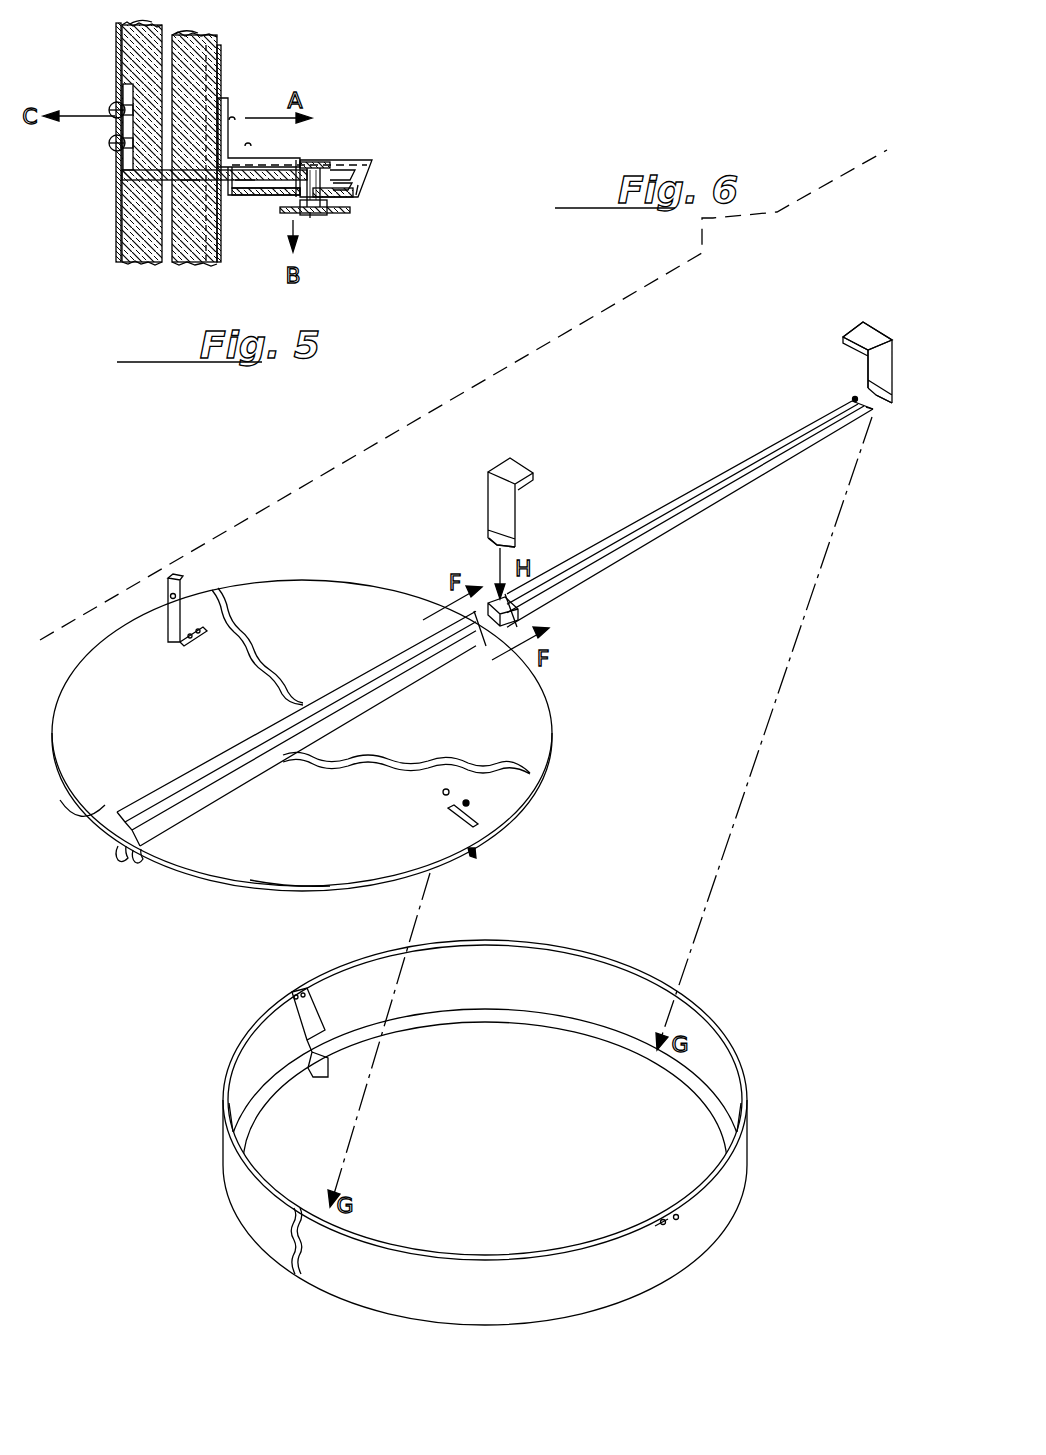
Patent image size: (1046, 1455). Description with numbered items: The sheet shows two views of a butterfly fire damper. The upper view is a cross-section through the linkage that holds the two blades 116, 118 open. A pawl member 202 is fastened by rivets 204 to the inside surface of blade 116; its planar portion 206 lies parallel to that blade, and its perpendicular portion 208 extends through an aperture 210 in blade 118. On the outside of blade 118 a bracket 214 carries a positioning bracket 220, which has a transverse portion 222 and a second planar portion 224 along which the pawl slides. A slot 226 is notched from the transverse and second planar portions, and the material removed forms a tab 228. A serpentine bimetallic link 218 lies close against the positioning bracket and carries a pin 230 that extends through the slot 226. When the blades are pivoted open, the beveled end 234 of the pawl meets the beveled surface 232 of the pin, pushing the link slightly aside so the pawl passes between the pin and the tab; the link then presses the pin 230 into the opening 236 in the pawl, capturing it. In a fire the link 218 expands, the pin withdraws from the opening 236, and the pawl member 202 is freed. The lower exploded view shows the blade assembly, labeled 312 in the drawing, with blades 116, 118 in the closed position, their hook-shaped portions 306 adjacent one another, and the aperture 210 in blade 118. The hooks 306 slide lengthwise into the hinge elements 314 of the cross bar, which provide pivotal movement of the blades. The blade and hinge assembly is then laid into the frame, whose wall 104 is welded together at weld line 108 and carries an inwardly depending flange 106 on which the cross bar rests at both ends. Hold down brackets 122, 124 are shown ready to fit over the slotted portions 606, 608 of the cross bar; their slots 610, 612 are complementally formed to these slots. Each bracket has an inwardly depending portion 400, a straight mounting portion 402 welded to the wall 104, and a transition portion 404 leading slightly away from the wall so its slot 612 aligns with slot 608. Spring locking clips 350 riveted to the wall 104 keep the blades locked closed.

In FIG. 6, the wall 104 is at (568, 1295).
In FIG. 6, the inwardly depending flange 106 is at (540, 1022).
In FIG. 6, the weld line 108 is at (298, 1268).
In FIG. 5, the blade 116 is at (117, 38).
In FIG. 6, the blade 116 is at (107, 795).
In FIG. 5, the blade 118 is at (217, 55).
In FIG. 6, the blade 118 is at (270, 852).
In FIG. 6, the hold down bracket 122 is at (897, 350).
In FIG. 6, the hold down bracket 124 is at (496, 500).
In FIG. 5, the pawl member 202 is at (128, 176).
In FIG. 6, the pawl member 202 is at (182, 604).
In FIG. 5, the rivets 204 is at (110, 143).
In FIG. 5, the planar portion 206 is at (118, 93).
In FIG. 5, the perpendicular portion 208 is at (246, 182).
In FIG. 5, the aperture 210 is at (200, 182).
In FIG. 6, the aperture 210 is at (478, 816).
In FIG. 5, the bracket 214 is at (229, 108).
In FIG. 5, the serpentine bimetallic link 218 is at (345, 212).
In FIG. 5, the positioning bracket 220 is at (360, 165).
In FIG. 5, the transverse portion 222 is at (368, 176).
In FIG. 5, the second planar portion 224 is at (270, 196).
In FIG. 5, the slot 226 is at (352, 199).
In FIG. 5, the tab 228 is at (320, 162).
In FIG. 5, the pin 230 is at (358, 190).
In FIG. 5, the beveled surface 232 is at (300, 168).
In FIG. 5, the beveled end 234 is at (362, 186).
In FIG. 5, the opening 236 is at (312, 160).
In FIG. 6, the hook-shaped portion 306 is at (125, 858).
In FIG. 5, the panel 312 is at (190, 32).
In FIG. 6, the panel 312 is at (315, 605).
In FIG. 6, the hinge elements 314 is at (660, 520).
In FIG. 6, the spring locking clips 350 is at (324, 1002).
In FIG. 6, the inwardly depending portion 400 is at (858, 337).
In FIG. 6, the straight mounting portion 402 is at (878, 370).
In FIG. 6, the transition portion 404 is at (897, 391).
In FIG. 6, the slotted portion 606 is at (522, 617).
In FIG. 6, the slotted portion 608 is at (853, 398).
In FIG. 6, the slot 610 is at (500, 548).
In FIG. 6, the slot 612 is at (880, 402).